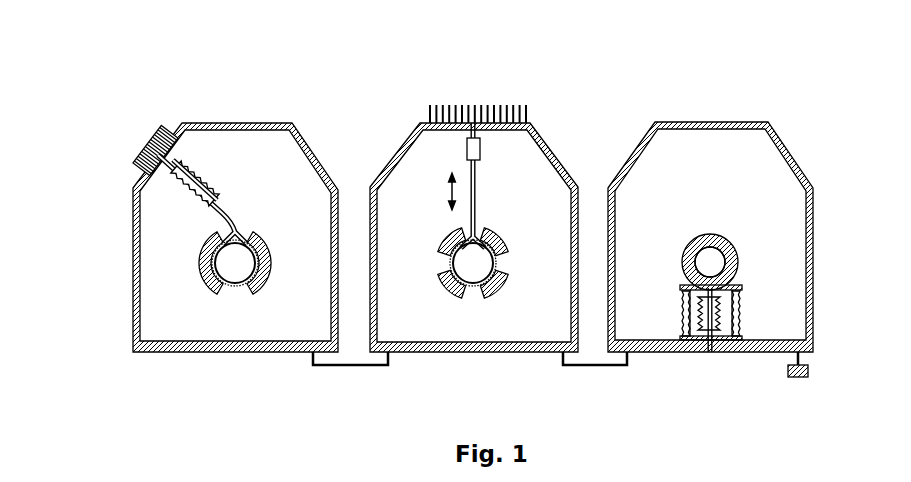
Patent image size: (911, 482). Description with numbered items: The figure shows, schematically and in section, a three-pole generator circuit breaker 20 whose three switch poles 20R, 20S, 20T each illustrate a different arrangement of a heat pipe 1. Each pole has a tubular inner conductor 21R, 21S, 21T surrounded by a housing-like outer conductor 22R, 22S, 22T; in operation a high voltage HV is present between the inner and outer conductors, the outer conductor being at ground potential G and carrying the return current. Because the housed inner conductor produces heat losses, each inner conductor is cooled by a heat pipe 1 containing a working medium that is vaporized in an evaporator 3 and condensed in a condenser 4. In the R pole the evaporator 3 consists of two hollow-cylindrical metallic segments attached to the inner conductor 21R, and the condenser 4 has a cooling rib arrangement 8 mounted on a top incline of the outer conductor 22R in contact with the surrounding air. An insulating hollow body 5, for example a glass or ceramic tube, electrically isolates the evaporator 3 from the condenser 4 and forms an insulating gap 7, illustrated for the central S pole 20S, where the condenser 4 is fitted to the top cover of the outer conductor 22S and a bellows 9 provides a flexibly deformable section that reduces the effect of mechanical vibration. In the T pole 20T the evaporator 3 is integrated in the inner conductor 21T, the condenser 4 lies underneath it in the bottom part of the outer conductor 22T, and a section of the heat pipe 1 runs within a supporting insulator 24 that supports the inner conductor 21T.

The generator circuit breaker 20 is at (54, 47).
The switch pole 20R is at (200, 88).
The switch pole 20S is at (432, 90).
The switch pole 20T is at (667, 90).
The outer conductor 22R is at (310, 149).
The outer conductor 22S is at (548, 146).
The outer conductor 22T is at (722, 122).
The inner conductor 21R is at (238, 291).
The inner conductor 21S is at (476, 290).
The inner conductor 21T is at (710, 234).
The heat pipe 1 is at (244, 153).
The evaporator 3 is at (203, 272).
The condenser 4 is at (712, 352).
The insulating hollow body 5 is at (188, 182).
The insulating gap 7 is at (441, 191).
The cooling rib arrangement 8 is at (156, 142).
The bellows 9 is at (482, 148).
The supporting insulator 24 is at (683, 313).
The high voltage HV is at (738, 283).
The ground potential G is at (808, 374).